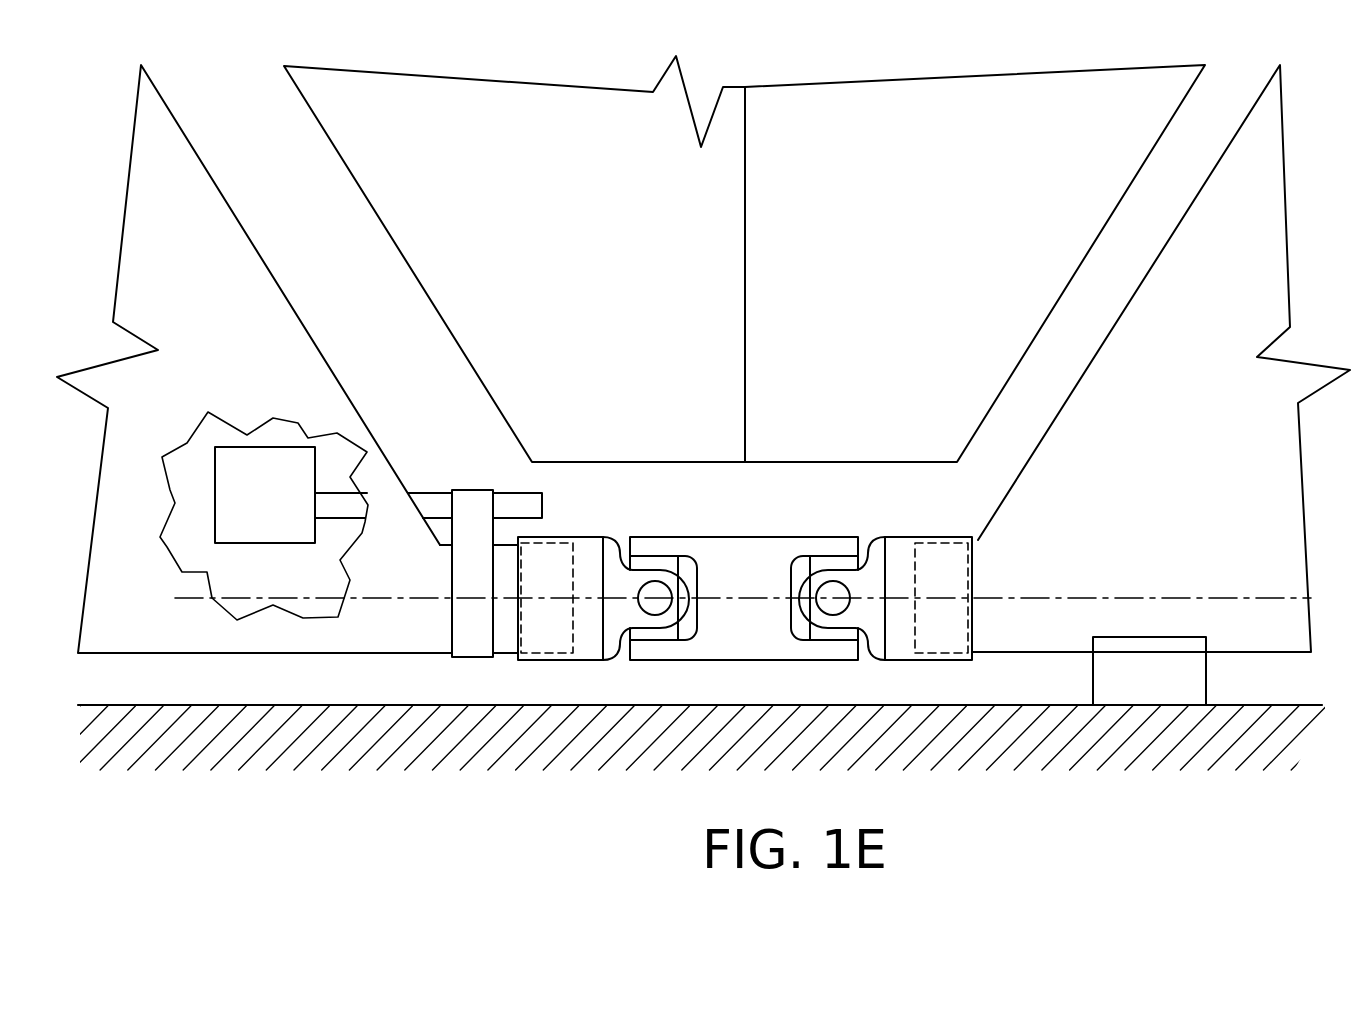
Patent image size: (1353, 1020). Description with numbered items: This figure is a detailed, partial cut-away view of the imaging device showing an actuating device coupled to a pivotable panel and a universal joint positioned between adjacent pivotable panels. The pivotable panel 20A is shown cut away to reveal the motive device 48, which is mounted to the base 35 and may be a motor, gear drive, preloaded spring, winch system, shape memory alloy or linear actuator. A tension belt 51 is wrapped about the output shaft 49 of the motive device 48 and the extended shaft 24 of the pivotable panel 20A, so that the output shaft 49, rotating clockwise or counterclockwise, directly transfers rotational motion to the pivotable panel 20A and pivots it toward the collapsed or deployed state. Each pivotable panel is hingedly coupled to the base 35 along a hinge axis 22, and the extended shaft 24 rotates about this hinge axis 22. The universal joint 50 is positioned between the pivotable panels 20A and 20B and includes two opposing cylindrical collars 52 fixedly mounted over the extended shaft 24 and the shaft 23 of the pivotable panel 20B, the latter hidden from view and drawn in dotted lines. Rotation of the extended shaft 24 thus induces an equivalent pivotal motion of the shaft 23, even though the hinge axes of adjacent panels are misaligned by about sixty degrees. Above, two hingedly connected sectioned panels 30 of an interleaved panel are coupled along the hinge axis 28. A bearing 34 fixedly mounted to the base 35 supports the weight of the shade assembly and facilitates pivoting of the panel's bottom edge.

The pivotable panel 20A is at (234, 339).
The pivotable panel 20B is at (1152, 419).
The sectioned panel 30 is at (575, 283).
The hinge axis 28 is at (745, 192).
The motive device 48 is at (238, 506).
The output shaft 49 is at (426, 492).
The tension belt 51 is at (470, 498).
The cylindrical collar 52 is at (580, 537).
The universal joint 50 is at (745, 540).
The extended shaft 24 is at (533, 636).
The shaft 23 is at (944, 628).
The hinge axis 22 is at (193, 600).
The bearing 34 is at (1128, 668).
The base 35 is at (752, 758).